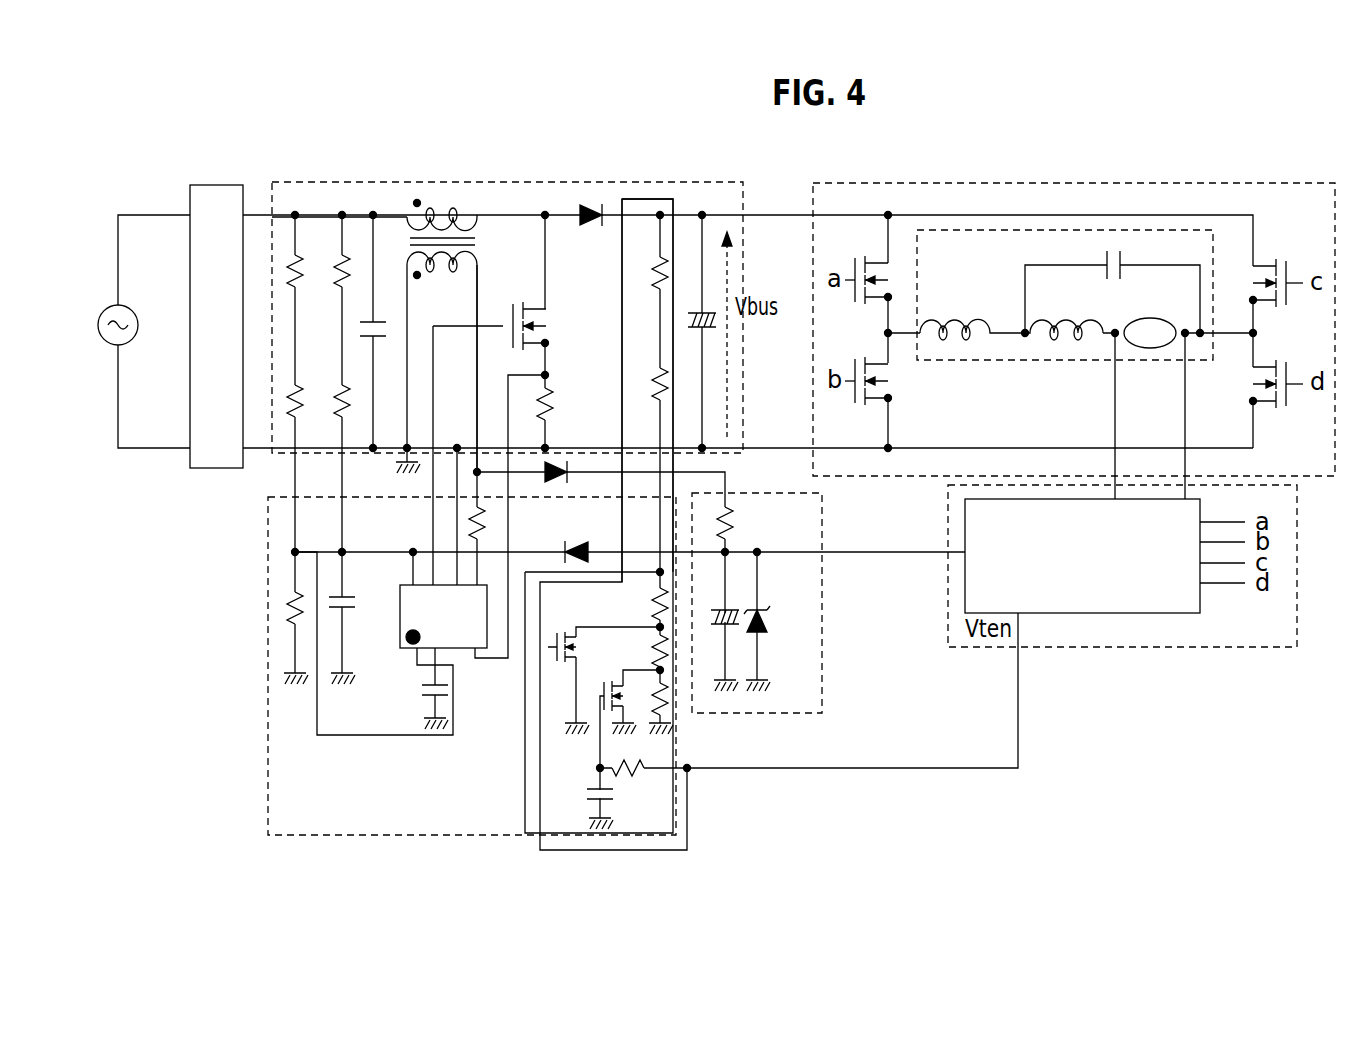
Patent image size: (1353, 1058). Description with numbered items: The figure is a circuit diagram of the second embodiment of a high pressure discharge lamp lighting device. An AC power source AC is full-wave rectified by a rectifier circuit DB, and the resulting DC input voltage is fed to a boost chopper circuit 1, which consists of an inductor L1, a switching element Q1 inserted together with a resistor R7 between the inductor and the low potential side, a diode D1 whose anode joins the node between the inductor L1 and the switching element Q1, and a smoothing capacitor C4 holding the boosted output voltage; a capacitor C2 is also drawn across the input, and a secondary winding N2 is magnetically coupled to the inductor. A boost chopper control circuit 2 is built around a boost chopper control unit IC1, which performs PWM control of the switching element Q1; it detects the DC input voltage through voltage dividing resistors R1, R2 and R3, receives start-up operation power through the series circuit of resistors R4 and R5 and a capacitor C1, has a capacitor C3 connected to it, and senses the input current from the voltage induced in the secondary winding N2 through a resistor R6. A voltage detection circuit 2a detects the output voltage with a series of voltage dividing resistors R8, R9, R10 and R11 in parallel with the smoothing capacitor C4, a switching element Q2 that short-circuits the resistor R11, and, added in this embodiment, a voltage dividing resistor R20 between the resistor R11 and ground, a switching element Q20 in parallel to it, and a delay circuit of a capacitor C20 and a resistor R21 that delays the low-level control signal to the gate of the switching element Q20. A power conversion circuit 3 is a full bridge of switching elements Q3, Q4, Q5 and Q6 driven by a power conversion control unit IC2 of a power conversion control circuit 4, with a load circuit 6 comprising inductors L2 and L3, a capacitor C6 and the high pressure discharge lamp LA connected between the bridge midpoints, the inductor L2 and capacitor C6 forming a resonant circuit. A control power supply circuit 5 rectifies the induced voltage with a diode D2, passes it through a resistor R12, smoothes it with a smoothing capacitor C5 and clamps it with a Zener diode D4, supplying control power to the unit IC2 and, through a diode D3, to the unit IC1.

The boost chopper circuit 1 is at (597, 182).
The boost chopper control circuit 2 is at (307, 836).
The voltage detection circuit 2a is at (658, 199).
The power conversion circuit 3 is at (1141, 183).
The power conversion control circuit 4 is at (1258, 647).
The control power supply circuit 5 is at (822, 690).
The load circuit 6 is at (1180, 229).
The AC power source AC is at (111, 311).
The rectifier circuit DB is at (203, 183).
The inductor L1 is at (374, 211).
The secondary winding N2 is at (465, 361).
The switching element Q1 is at (543, 326).
The diode D1 is at (591, 230).
The smoothing capacitor C4 is at (697, 306).
The voltage dividing resistor R1 is at (307, 256).
The voltage dividing resistor R2 is at (307, 413).
The voltage dividing resistor R3 is at (286, 622).
The resistor R4 is at (332, 284).
The resistor R5 is at (332, 387).
The resistor R6 is at (487, 522).
The resistor R7 is at (562, 403).
The voltage dividing resistor R8 is at (648, 284).
The voltage dividing resistor R9 is at (650, 396).
The voltage dividing resistor R10 is at (637, 604).
The voltage dividing resistor R11 is at (640, 650).
The resistor R12 is at (748, 523).
The voltage dividing resistor R20 is at (661, 708).
The resistor R21 is at (637, 785).
The capacitor C1 is at (352, 587).
The capacitor C2 is at (382, 344).
The capacitor C3 is at (423, 694).
The smoothing capacitor C5 is at (718, 603).
The capacitor C6 is at (1099, 254).
The capacitor C20 is at (584, 803).
The diode D2 is at (571, 481).
The diode D3 is at (578, 536).
The Zener diode D4 is at (772, 620).
The boost chopper control unit IC1 is at (465, 645).
The power conversion control unit IC2 is at (1137, 603).
The switching element Q2 is at (561, 633).
The switching element Q20 is at (602, 683).
The switching element Q3 is at (880, 280).
The switching element Q4 is at (881, 381).
The switching element Q5 is at (1265, 283).
The switching element Q6 is at (1262, 384).
The inductor L2 is at (972, 315).
The inductor L3 is at (1064, 315).
The high pressure discharge lamp LA is at (1148, 342).